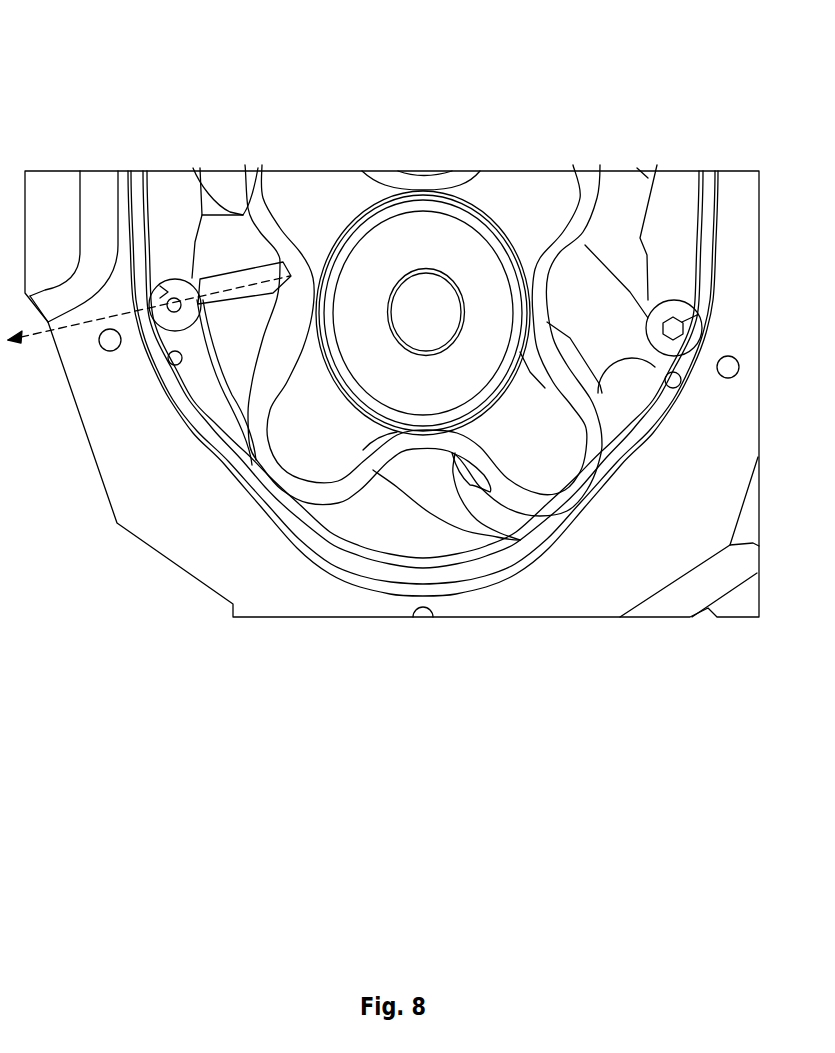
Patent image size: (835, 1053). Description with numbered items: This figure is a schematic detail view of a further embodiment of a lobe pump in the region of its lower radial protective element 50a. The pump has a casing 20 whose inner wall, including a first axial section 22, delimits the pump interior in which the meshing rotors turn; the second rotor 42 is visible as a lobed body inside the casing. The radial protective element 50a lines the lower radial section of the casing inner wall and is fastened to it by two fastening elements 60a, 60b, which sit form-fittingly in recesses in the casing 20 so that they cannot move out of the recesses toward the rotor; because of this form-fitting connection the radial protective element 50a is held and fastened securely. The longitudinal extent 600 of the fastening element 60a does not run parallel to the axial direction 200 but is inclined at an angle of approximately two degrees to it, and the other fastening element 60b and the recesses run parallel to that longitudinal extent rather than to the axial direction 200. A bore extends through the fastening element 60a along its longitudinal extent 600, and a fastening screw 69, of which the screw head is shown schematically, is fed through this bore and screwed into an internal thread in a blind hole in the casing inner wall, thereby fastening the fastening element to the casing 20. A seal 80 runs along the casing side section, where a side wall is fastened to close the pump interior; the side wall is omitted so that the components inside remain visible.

The casing 20 is at (190, 380).
The first axial section 22 is at (430, 483).
The second rotor 42 is at (528, 205).
The radial protective element 50a is at (385, 528).
The fastening element 60a is at (170, 280).
The fastening element 60b is at (674, 300).
The fastening screw 69 is at (675, 337).
The seal 80 is at (288, 538).
The axial direction 200 is at (35, 326).
The longitudinal extent 600 is at (255, 275).